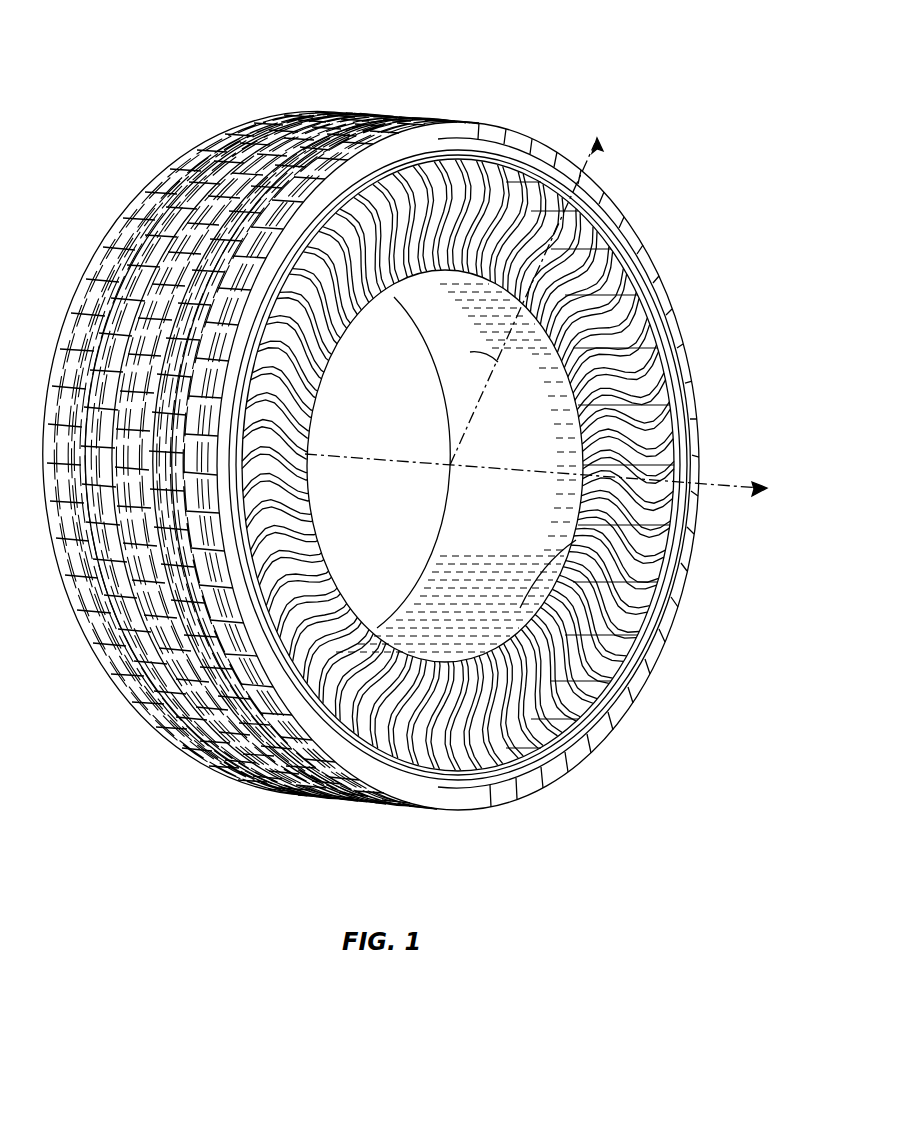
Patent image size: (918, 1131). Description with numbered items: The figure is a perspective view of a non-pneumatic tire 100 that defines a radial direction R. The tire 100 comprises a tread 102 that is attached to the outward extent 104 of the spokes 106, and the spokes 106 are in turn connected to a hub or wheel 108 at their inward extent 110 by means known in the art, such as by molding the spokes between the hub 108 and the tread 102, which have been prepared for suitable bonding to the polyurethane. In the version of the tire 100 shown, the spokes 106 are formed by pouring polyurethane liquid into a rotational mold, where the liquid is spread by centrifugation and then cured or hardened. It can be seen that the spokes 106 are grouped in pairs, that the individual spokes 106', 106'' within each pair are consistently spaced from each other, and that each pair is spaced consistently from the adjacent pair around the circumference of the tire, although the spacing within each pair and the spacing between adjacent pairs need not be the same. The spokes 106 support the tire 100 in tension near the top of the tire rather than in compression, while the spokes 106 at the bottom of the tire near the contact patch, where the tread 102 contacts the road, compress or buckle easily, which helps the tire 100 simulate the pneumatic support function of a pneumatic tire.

The tire 100 is at (405, 436).
The tread 102 is at (325, 797).
The outward extent of the spokes 104 is at (443, 780).
The spokes 106 is at (458, 464).
The spoke 106' is at (641, 602).
The spoke 106'' is at (628, 649).
The hub or wheel 108 is at (528, 450).
The inward extent of the spokes 110 is at (567, 551).
The radial direction R is at (475, 351).